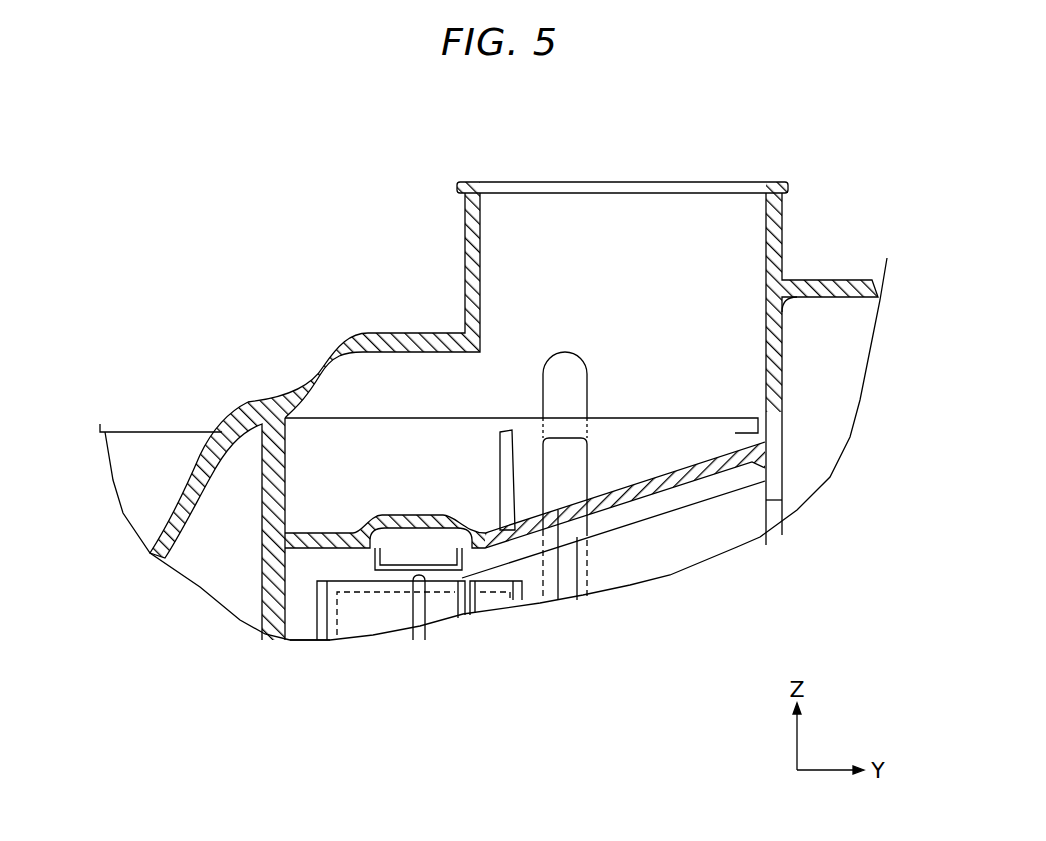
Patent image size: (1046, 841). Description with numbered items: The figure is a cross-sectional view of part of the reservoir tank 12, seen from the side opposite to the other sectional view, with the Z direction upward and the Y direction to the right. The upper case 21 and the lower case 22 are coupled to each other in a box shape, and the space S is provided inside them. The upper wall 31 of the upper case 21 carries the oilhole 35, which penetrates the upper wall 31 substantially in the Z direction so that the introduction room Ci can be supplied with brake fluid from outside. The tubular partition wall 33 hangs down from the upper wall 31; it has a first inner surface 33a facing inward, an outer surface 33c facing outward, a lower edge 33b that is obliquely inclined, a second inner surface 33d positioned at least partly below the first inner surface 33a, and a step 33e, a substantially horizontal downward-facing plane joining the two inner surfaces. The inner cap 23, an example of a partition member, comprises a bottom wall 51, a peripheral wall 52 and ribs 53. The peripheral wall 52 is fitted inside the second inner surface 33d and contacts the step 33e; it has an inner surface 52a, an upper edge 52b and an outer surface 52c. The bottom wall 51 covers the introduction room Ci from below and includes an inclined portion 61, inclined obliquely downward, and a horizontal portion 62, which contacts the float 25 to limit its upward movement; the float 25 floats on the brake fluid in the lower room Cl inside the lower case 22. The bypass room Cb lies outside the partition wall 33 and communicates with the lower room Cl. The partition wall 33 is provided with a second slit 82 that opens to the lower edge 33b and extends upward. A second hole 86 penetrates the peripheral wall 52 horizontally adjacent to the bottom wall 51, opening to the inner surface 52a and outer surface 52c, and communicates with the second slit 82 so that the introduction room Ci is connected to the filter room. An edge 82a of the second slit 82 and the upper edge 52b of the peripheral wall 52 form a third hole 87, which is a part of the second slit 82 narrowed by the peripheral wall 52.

The reservoir tank 12 is at (190, 280).
The upper case 21 is at (315, 416).
The lower case 22 is at (776, 540).
The inner cap 23 is at (365, 417).
The float 25 is at (325, 615).
The upper wall 31 is at (430, 345).
The partition wall 33 is at (217, 494).
The first inner surface 33a is at (822, 379).
The lower edge 33b is at (785, 493).
The outer surface 33c is at (785, 357).
The second inner surface 33d is at (766, 478).
The step 33e is at (783, 433).
The oilhole 35 is at (543, 207).
The bottom wall 51 is at (525, 557).
The peripheral wall 52 is at (240, 405).
The inner surface 52a is at (610, 288).
The upper edge 52b is at (760, 410).
The outer surface 52c is at (785, 466).
The rib 53 is at (498, 457).
The inclined portion 61 is at (607, 505).
The horizontal portion 62 is at (338, 542).
The second slit 82 is at (546, 373).
The edge of the second slit 82a is at (546, 378).
The second hole 86 is at (558, 600).
The third hole 87 is at (565, 476).
The introduction room Ci is at (406, 356).
The bypass room Cb is at (840, 301).
The lower room Cl is at (670, 573).
The space S is at (210, 535).